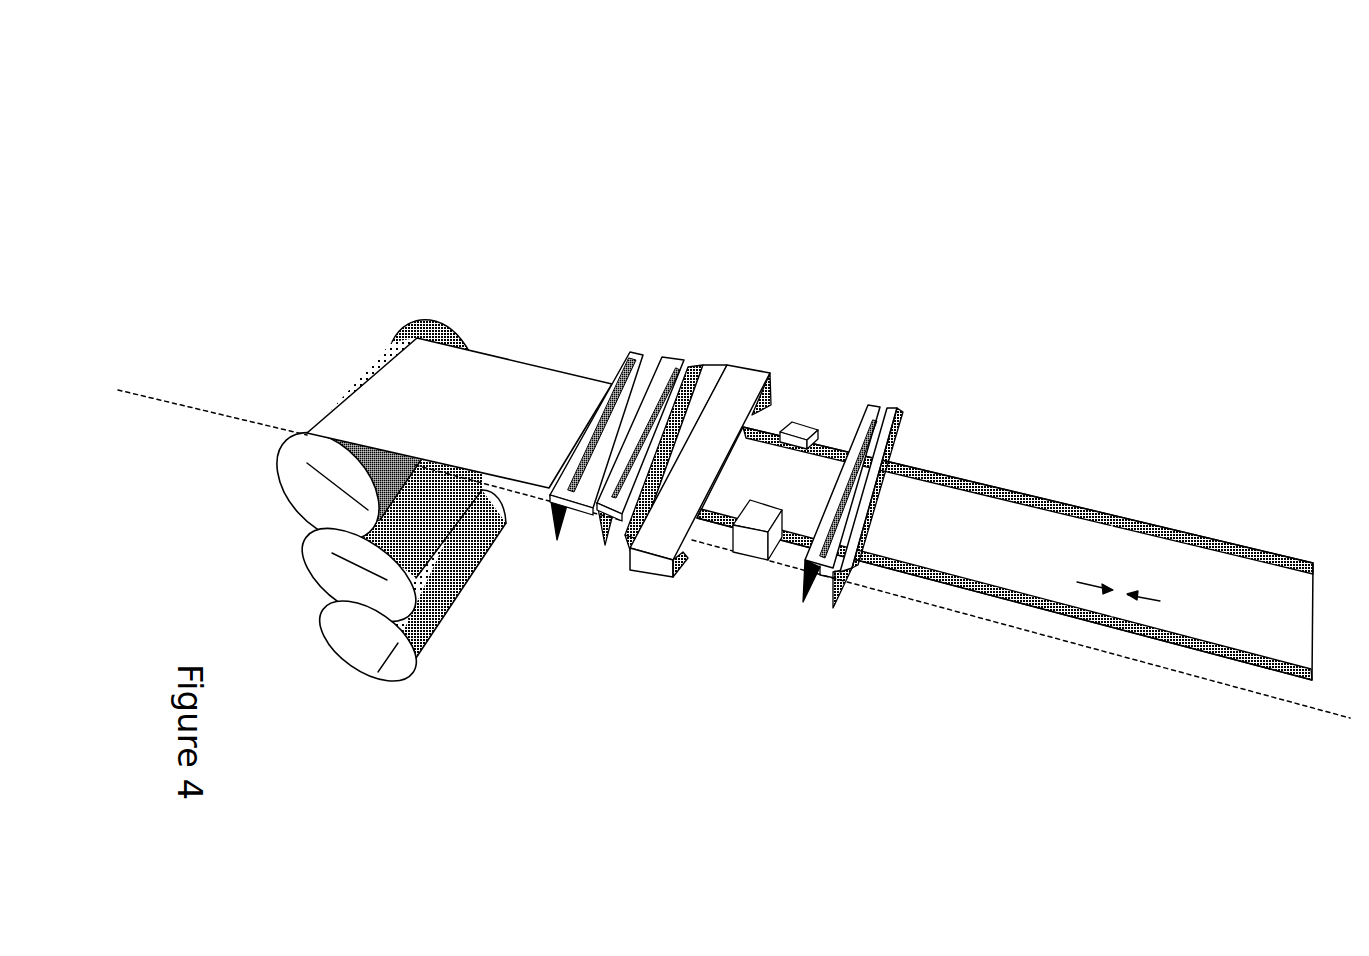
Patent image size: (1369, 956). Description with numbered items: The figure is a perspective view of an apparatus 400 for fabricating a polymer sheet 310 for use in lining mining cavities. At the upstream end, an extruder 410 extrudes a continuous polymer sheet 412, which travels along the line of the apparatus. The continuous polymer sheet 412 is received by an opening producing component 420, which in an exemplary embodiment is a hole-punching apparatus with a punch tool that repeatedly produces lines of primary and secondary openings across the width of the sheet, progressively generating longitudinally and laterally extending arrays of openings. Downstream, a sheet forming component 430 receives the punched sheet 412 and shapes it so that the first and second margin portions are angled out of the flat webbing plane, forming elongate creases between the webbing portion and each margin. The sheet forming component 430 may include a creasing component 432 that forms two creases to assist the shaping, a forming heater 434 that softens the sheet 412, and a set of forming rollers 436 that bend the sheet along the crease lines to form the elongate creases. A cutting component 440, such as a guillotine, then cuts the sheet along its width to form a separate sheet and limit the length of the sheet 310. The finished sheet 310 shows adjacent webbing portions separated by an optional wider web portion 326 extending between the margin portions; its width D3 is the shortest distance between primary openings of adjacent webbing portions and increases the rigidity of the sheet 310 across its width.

The apparatus 400 is at (274, 123).
The extruder 410 is at (307, 433).
The continuous polymer sheet 412 is at (505, 348).
The opening producing component 420 is at (612, 319).
The creasing component 432 is at (696, 416).
The sheet forming component 430 is at (739, 587).
The forming heater 434 is at (631, 603).
The forming rollers 436 is at (854, 339).
The cutting component 440 is at (877, 457).
The sheet 310 is at (1203, 508).
The wider web portion 326 is at (1106, 618).
The width of the wider web portion D3 is at (1145, 603).